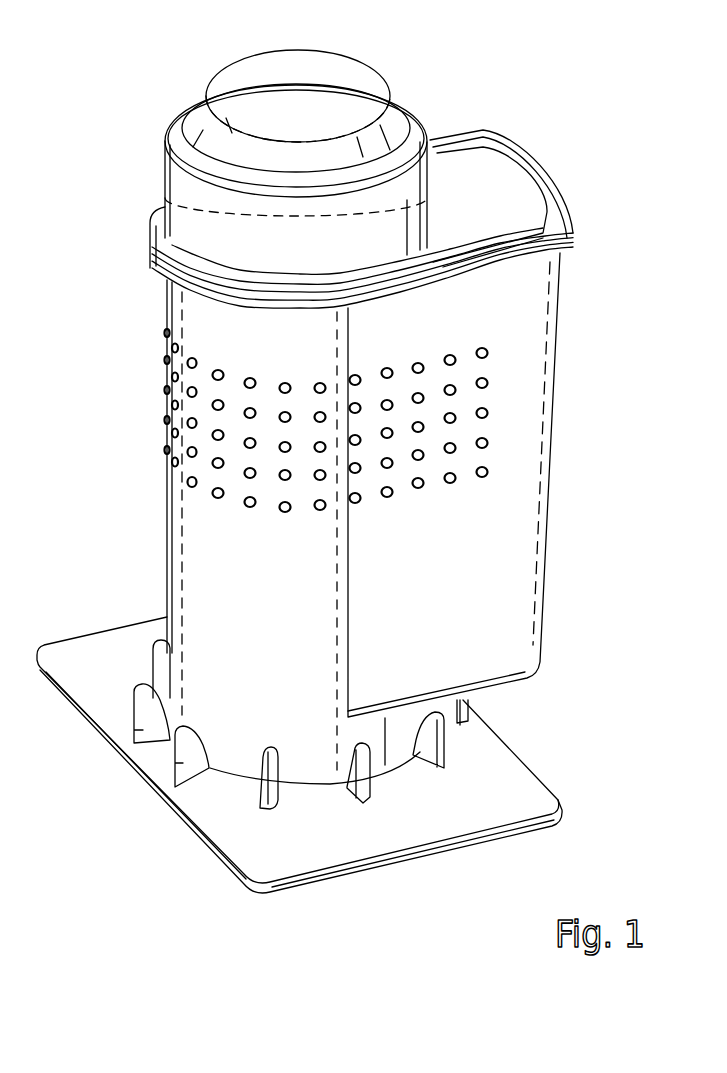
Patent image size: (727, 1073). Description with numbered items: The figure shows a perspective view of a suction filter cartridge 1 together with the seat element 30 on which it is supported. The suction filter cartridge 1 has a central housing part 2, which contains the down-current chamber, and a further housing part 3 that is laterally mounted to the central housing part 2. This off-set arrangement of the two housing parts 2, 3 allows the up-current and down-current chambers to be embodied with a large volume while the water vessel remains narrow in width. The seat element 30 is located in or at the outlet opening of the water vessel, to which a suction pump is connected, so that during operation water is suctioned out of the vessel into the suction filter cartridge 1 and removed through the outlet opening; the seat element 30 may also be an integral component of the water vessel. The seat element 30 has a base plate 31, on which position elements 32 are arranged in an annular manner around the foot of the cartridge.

The suction filter cartridge 1 is at (517, 111).
The central housing part 2 is at (186, 520).
The housing part 3 is at (523, 518).
The seat element 30 is at (558, 801).
The base plate 31 is at (390, 832).
The position elements 32 is at (258, 792).